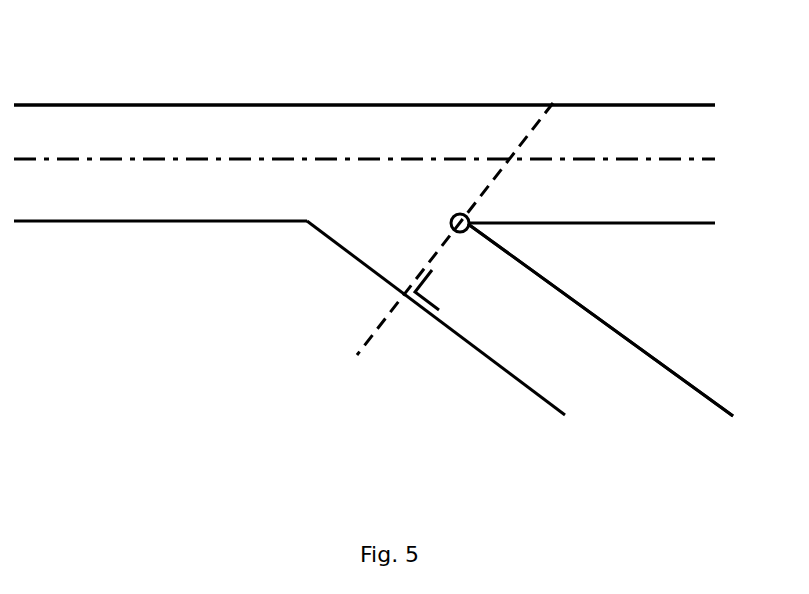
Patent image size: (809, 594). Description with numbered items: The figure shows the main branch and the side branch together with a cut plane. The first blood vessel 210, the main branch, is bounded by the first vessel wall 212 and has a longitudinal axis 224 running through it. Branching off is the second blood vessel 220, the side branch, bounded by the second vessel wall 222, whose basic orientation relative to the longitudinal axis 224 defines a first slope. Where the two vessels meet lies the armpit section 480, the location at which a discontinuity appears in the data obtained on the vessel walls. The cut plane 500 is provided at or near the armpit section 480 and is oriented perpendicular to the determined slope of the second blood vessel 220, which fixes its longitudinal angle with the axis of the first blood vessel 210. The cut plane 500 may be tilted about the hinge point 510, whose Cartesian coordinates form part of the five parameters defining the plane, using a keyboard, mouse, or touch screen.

The first blood vessel 210 is at (130, 258).
The first vessel wall 212 is at (138, 104).
The longitudinal axis 224 is at (281, 165).
The second blood vessel 220 is at (678, 435).
The second vessel wall 222 is at (683, 372).
The armpit section 480 is at (470, 222).
The cut plane 500 is at (520, 147).
The hinge point 510 is at (450, 224).